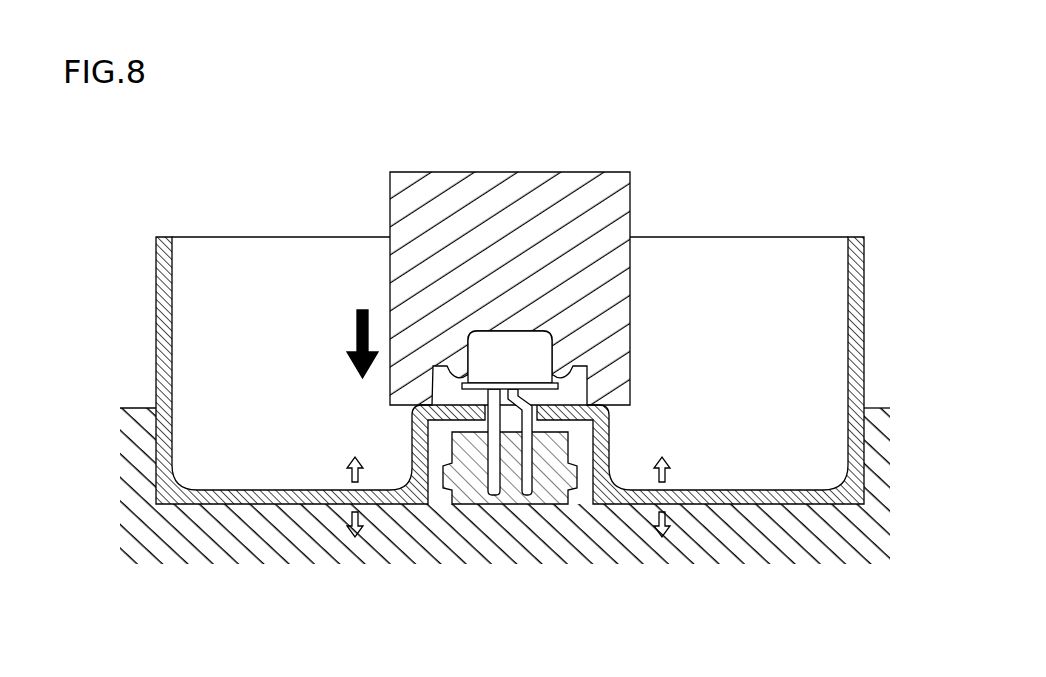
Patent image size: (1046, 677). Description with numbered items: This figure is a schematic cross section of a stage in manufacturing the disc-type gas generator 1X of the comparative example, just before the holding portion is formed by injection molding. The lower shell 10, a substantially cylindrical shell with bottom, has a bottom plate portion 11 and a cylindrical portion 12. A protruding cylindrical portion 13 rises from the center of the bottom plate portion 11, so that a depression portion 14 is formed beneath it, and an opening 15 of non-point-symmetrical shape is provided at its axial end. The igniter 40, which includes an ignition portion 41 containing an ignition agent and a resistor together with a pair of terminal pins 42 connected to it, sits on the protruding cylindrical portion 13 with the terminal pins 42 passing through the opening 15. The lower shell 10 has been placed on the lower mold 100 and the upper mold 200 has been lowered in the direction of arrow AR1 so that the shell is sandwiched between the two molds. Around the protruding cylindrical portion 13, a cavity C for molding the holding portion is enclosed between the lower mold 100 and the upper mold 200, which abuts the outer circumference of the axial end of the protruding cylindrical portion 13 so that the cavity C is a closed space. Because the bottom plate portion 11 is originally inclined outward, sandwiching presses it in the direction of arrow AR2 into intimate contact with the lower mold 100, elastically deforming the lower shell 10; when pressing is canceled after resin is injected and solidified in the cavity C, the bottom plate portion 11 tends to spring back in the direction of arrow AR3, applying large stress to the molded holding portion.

The disc-type gas generator 1X is at (910, 109).
The lower shell 10 is at (190, 221).
The bottom plate portion 11 is at (782, 504).
The cylindrical portion 12 is at (858, 288).
The protruding cylindrical portion 13 is at (416, 458).
The depression portion 14 is at (434, 466).
The opening 15 is at (537, 433).
The igniter 40 is at (481, 325).
The ignition portion 41 is at (525, 358).
The terminal pins 42 is at (493, 452).
The lower mold 100 is at (620, 540).
The upper mold 200 is at (612, 195).
The cavity C is at (567, 391).
The arrow AR1 is at (355, 333).
The arrow AR2 is at (348, 517).
The arrow AR3 is at (345, 473).